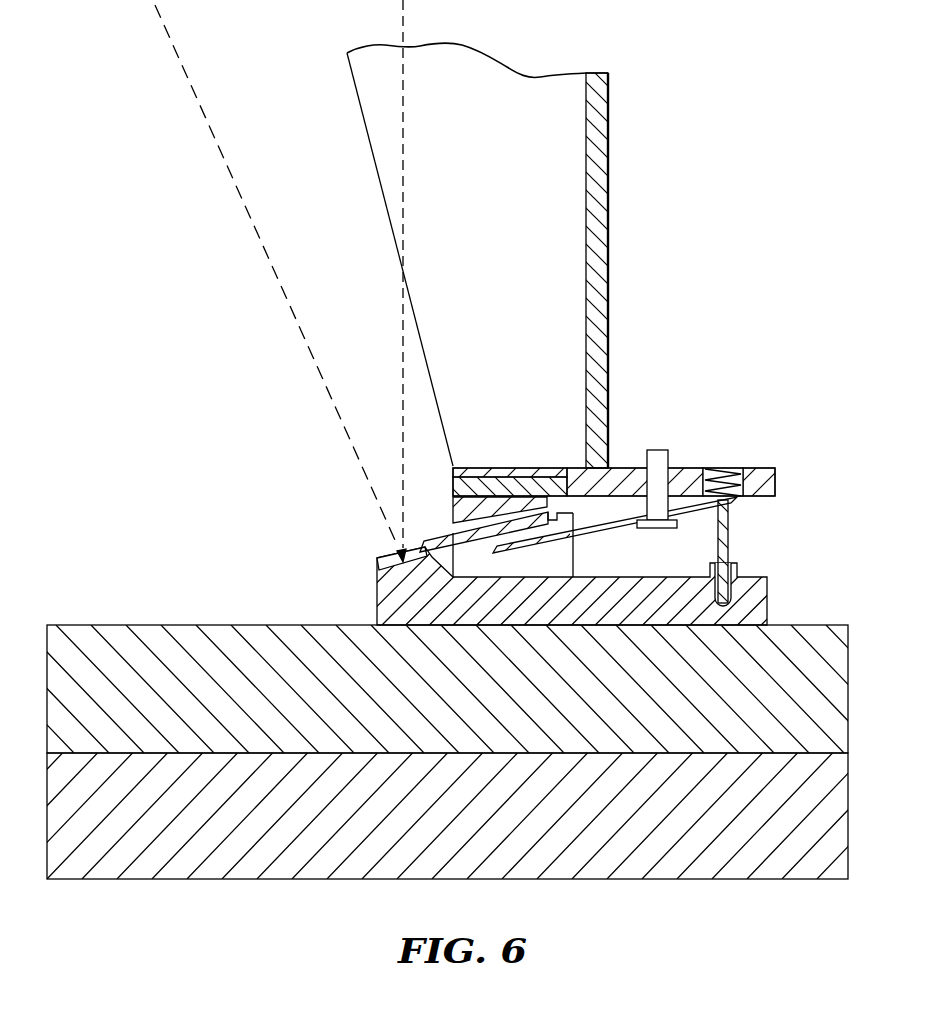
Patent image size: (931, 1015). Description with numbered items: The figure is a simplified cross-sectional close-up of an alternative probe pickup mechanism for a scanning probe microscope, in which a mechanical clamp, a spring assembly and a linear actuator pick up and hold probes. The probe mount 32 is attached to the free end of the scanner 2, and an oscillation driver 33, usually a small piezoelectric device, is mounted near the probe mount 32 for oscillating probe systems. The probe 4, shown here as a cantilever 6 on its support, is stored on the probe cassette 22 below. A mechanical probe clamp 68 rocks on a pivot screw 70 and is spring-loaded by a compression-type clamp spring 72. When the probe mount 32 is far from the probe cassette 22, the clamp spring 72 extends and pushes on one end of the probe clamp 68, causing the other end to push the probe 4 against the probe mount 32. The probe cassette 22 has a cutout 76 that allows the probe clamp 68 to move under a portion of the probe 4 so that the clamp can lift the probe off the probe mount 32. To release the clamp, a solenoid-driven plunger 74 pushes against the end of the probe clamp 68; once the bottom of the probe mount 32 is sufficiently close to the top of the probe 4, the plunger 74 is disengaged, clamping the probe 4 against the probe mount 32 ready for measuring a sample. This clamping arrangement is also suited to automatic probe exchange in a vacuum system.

The scanner 2 is at (610, 190).
The probe 4 is at (402, 550).
The cantilever 6 is at (387, 572).
The probe cassette 22 is at (375, 611).
The probe mount 32 is at (453, 511).
The oscillation driver 33 is at (453, 481).
The mechanical probe clamp 68 is at (606, 527).
The pivot screw 70 is at (667, 458).
The clamp spring 72 is at (733, 468).
The solenoid-driven plunger 74 is at (729, 537).
The cutout 76 is at (542, 568).